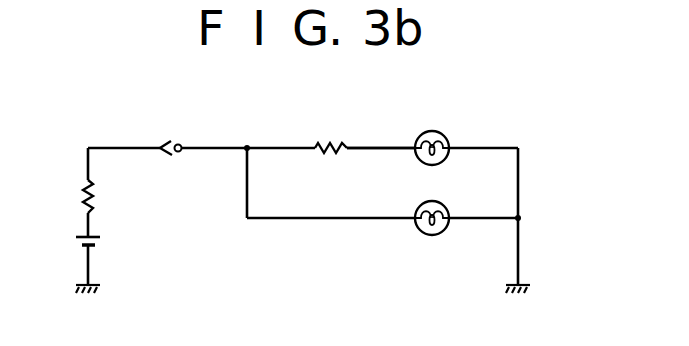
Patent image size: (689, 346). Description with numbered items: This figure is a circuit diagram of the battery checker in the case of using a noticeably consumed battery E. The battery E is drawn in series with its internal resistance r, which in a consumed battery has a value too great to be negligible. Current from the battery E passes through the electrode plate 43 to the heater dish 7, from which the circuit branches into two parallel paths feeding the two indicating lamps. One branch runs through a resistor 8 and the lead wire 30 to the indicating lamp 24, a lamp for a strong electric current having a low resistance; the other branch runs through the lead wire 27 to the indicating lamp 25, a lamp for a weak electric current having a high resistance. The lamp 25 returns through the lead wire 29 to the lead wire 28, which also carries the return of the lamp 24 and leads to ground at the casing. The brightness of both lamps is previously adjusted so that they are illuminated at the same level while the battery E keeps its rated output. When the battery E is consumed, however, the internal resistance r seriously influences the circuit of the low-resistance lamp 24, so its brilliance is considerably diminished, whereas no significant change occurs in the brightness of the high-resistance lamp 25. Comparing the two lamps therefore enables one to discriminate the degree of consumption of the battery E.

The electrode plate 43 is at (166, 143).
The heater dish 7 is at (180, 142).
The internal resistance r is at (85, 195).
The battery E is at (80, 241).
The resistor 8 is at (330, 152).
The lead wire 30 is at (372, 145).
The indicating lamp 24 is at (443, 134).
The indicating lamp 25 is at (443, 207).
The lead wire 27 is at (347, 221).
The lead wire 29 is at (519, 180).
The lead wire 28 is at (519, 248).